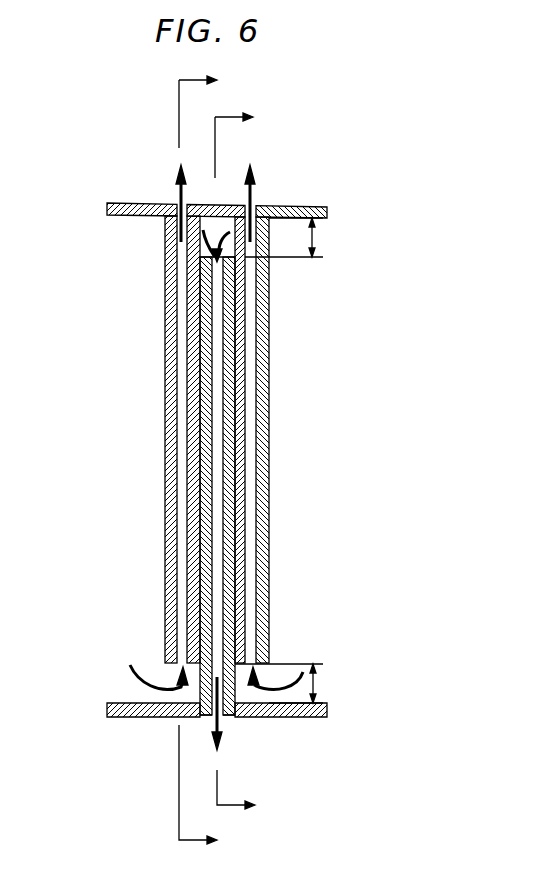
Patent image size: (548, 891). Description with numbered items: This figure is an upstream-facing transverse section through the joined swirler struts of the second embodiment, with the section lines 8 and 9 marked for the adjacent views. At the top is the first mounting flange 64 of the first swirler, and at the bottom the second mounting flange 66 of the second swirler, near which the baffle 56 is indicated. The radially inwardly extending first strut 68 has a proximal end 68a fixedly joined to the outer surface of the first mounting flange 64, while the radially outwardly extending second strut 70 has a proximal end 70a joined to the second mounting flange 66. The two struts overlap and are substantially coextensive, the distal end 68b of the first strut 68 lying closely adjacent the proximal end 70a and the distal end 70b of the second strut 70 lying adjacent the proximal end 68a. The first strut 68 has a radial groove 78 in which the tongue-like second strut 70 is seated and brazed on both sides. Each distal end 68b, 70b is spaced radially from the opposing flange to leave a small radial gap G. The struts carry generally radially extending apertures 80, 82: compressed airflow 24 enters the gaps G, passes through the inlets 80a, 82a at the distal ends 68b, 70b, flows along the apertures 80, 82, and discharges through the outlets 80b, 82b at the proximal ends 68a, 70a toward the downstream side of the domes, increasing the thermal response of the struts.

The section line 8- 8 is at (210, 464).
The section line 9- 9 is at (248, 464).
The compressed airflow 24 is at (197, 248).
The baffle 56 is at (226, 458).
The first mounting flange 64 is at (329, 208).
The second mounting flange 66 is at (329, 712).
The first strut 68 is at (164, 368).
The proximal end of first strut 68a is at (164, 228).
The distal end of first strut 68b is at (162, 690).
The second strut 70 is at (236, 550).
The proximal end of second strut 70a is at (196, 700).
The distal end of second strut 70b is at (246, 258).
The radial groove 78 is at (210, 233).
The aperture of first strut 80 is at (182, 412).
The inlet of first strut aperture 80a is at (179, 634).
The outlet of first strut aperture 80b is at (177, 207).
The aperture of second strut 82 is at (215, 465).
The inlet of second strut aperture 82a is at (178, 266).
The outlet of second strut aperture 82b is at (237, 700).
The radial gap G is at (316, 240).